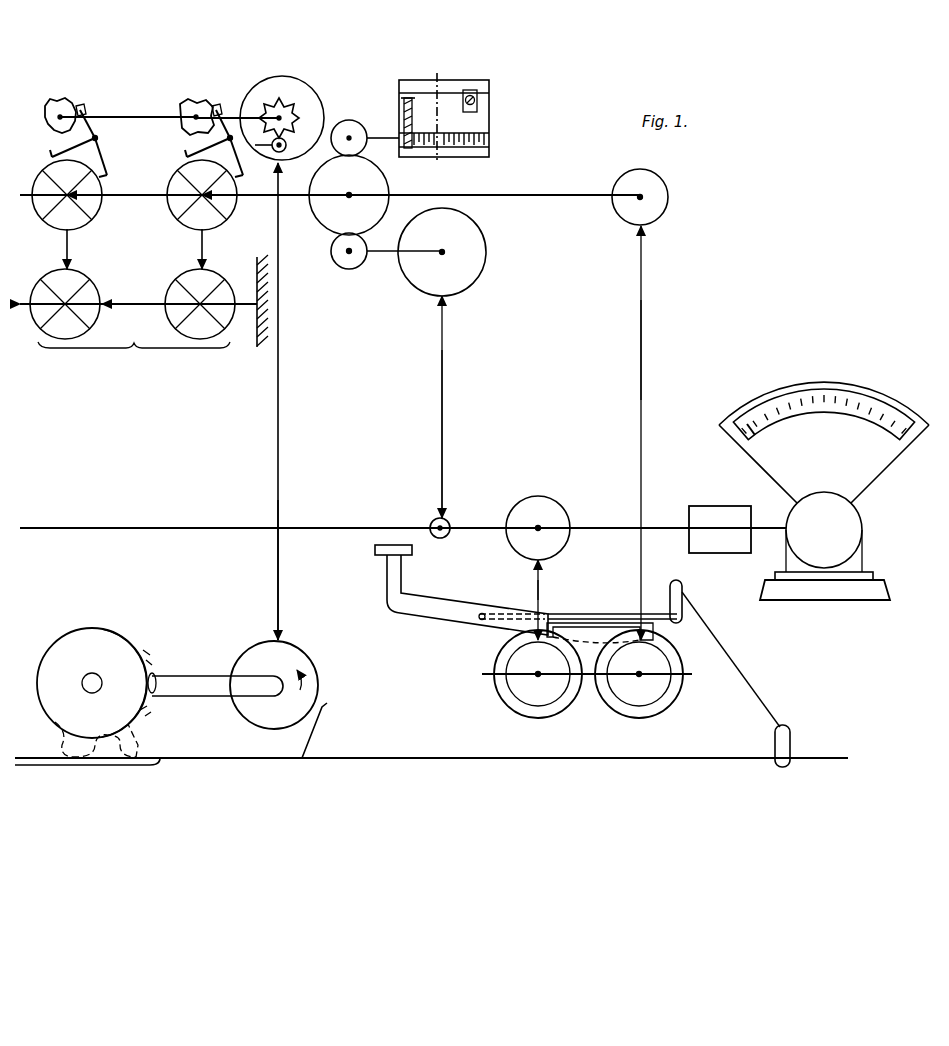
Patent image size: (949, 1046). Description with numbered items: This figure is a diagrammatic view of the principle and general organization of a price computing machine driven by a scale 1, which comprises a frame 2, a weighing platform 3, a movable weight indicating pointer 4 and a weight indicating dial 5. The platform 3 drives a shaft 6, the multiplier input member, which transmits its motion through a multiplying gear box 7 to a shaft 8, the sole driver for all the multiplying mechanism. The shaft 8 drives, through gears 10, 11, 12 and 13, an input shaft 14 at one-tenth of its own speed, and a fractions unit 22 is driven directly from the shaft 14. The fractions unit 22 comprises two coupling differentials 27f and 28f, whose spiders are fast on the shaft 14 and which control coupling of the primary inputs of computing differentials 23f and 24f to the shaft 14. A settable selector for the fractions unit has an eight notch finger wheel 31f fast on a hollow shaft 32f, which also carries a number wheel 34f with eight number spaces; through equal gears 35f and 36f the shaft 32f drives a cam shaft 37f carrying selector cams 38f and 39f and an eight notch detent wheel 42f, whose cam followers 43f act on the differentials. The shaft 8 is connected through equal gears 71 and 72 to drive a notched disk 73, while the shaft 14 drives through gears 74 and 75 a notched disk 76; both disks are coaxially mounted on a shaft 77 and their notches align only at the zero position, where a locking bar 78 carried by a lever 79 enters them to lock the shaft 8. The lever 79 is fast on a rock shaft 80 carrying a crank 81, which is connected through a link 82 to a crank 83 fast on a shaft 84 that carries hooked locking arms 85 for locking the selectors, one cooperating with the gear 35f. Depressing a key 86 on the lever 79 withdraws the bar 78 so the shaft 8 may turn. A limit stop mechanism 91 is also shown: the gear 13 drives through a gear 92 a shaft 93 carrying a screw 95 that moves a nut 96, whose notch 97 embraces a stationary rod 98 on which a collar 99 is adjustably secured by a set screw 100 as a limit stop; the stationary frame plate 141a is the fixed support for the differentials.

The scale 1 is at (872, 505).
The frame 2 is at (878, 590).
The weighing platform 3 is at (872, 572).
The weight indicating pointer 4 is at (754, 428).
The weight indicating dial 5 is at (816, 394).
The shaft 6 is at (764, 542).
The multiplying gear box 7 is at (722, 508).
The shaft 8 is at (610, 527).
The gear 10 is at (447, 520).
The gear 11 is at (415, 288).
The gear 12 is at (336, 262).
The gear 13 is at (315, 226).
The input shaft 14 is at (256, 200).
The fractions unit 22 is at (134, 356).
The computing differential 23f is at (166, 318).
The computing differential 24f is at (93, 301).
The coupling differential 27f is at (168, 208).
The coupling differential 28f is at (71, 229).
The finger wheel 31f is at (55, 740).
The hollow shaft 32f is at (202, 684).
The number wheel 34f is at (78, 640).
The gear 35f is at (247, 650).
The gear 36f is at (300, 86).
The cam shaft 37f is at (139, 118).
The selector cam 38f is at (191, 102).
The selector cam 39f is at (57, 100).
The detent wheel 42f is at (270, 98).
The cam follower lever 43f is at (90, 109).
The gear 71 is at (549, 506).
The gear 72 is at (545, 710).
The notched disk 73 is at (500, 688).
The gear 74 is at (613, 211).
The gear 75 is at (632, 710).
The notched disk 76 is at (683, 688).
The shaft 77 is at (590, 690).
The locking bar 78 is at (612, 625).
The lever 79 is at (455, 606).
The rock shaft 80 is at (586, 612).
The crank 81 is at (670, 602).
The link 82 is at (735, 656).
The crank 83 is at (790, 745).
The shaft 84 is at (503, 760).
The hooked locking arm 85 is at (323, 727).
The key 86 is at (375, 550).
The limit stop mechanism 91 is at (492, 91).
The gear 92 is at (345, 120).
The shaft 93 is at (376, 137).
The screw 95 is at (455, 150).
The nut 96 is at (408, 150).
The notch 97 is at (408, 96).
The stationary rod 98 is at (441, 95).
The collar 99 is at (470, 88).
The set screw 100 is at (465, 123).
The stationary frame plate 141a is at (257, 282).